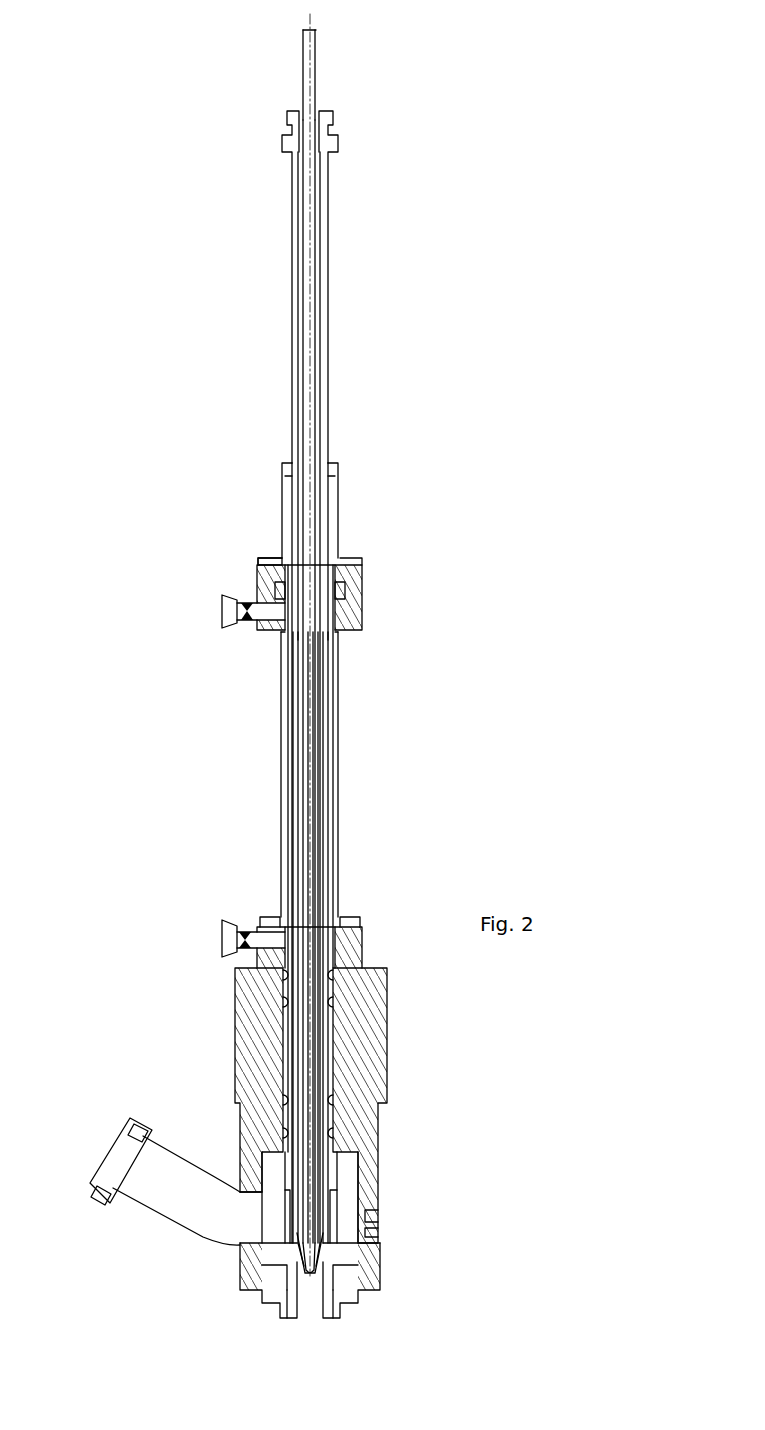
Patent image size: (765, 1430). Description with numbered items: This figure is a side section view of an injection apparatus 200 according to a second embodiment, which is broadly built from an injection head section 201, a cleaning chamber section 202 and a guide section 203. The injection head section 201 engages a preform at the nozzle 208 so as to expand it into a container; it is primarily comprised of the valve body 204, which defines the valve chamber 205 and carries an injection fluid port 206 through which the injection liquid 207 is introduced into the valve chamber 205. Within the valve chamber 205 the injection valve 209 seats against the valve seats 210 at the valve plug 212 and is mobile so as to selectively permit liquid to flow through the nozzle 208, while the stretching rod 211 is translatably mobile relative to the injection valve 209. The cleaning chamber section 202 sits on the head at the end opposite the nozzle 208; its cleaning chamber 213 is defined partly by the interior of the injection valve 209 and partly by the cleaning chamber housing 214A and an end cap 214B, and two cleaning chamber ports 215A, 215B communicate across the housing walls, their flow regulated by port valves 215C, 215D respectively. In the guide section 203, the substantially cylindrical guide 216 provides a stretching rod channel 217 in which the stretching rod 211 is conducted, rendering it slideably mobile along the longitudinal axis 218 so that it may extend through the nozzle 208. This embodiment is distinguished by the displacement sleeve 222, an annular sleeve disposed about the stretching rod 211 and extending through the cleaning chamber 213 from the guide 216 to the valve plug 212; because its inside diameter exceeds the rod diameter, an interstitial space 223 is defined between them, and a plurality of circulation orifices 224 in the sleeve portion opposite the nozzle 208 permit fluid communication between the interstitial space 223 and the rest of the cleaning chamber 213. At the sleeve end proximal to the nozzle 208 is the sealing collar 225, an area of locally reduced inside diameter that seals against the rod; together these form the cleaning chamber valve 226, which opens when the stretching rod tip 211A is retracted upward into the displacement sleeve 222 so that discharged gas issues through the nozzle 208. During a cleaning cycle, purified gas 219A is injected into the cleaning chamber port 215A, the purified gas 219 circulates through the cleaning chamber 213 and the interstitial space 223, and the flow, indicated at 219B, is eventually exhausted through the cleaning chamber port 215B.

The injection apparatus 200 is at (468, 812).
The injection head section 201 is at (440, 1222).
The cleaning chamber section 202 is at (370, 645).
The guide section 203 is at (360, 289).
The valve body 204 is at (368, 1147).
The valve chamber 205 is at (265, 1172).
The injection fluid port 206 is at (101, 1168).
The injection liquid 207 is at (100, 1153).
The nozzle 208 is at (316, 1322).
The injection valve 209 is at (335, 1180).
The valve seats 210 is at (255, 1266).
The stretching rod 211 is at (315, 976).
The stretching rod tip 211A is at (330, 1298).
The valve plug 212 is at (323, 1240).
The cleaning chamber 213 is at (290, 689).
The cleaning chamber housing 214A is at (338, 753).
The end cap 214B is at (338, 498).
The cleaning chamber port 215A is at (222, 610).
The cleaning chamber port 215B is at (222, 926).
The port valve 215C is at (248, 600).
The port valve 215D is at (245, 951).
The guide 216 is at (322, 197).
The stretching rod channel 217 is at (322, 368).
The longitudinal axis 218 is at (312, 20).
The purified gas 219 is at (292, 658).
The purified gas 219A is at (205, 618).
The second gas flow 219B is at (217, 938).
The displacement sleeve 222 is at (292, 752).
The interstitial space 223 is at (295, 831).
The circulation orifices 224 is at (300, 712).
The sealing collar 225 is at (280, 1298).
The cleaning chamber valve 226 is at (368, 1255).